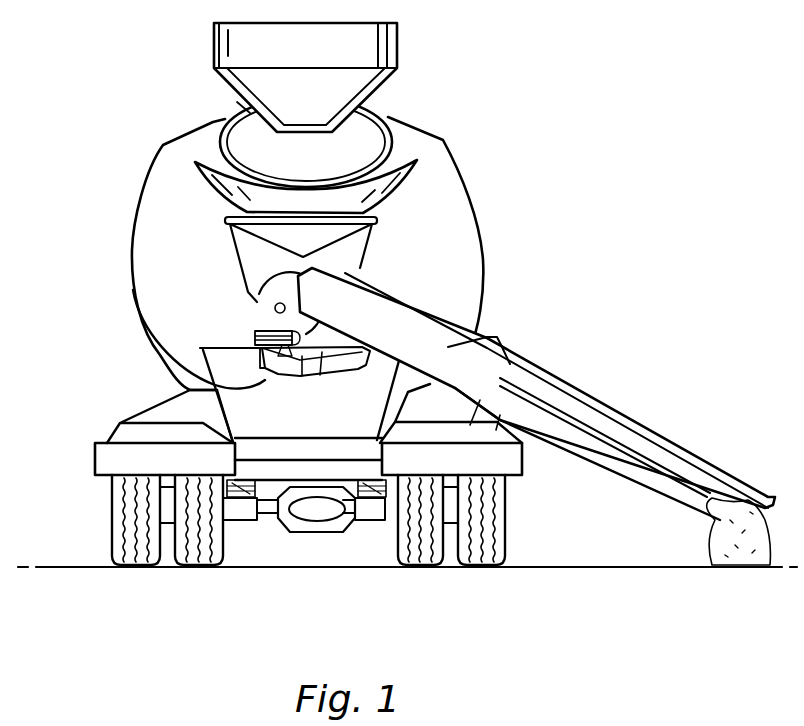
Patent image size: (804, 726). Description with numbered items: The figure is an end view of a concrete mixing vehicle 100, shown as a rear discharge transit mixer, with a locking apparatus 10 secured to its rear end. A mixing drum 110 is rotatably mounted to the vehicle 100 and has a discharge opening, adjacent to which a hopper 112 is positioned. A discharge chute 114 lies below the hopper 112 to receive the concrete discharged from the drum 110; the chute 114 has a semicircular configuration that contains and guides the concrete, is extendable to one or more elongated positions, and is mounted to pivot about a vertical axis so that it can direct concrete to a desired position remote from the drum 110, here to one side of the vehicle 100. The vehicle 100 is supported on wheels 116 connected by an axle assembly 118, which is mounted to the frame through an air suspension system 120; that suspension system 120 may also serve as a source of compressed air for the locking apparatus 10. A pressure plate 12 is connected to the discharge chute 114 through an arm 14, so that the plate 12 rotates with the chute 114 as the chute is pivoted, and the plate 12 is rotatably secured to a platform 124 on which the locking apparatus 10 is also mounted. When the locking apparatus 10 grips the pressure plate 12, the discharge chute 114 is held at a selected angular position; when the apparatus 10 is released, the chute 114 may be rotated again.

The mixing vehicle 100 is at (406, 333).
The mixing drum 110 is at (173, 203).
The hopper 112 is at (213, 165).
The discharge chute 114 is at (430, 322).
The wheels 116 is at (112, 528).
The axle assembly 118 is at (268, 534).
The air suspension system 120 is at (245, 497).
The platform 124 is at (262, 370).
The locking apparatus 10 is at (270, 333).
The pressure plate 12 is at (307, 352).
The arm 14 is at (283, 300).